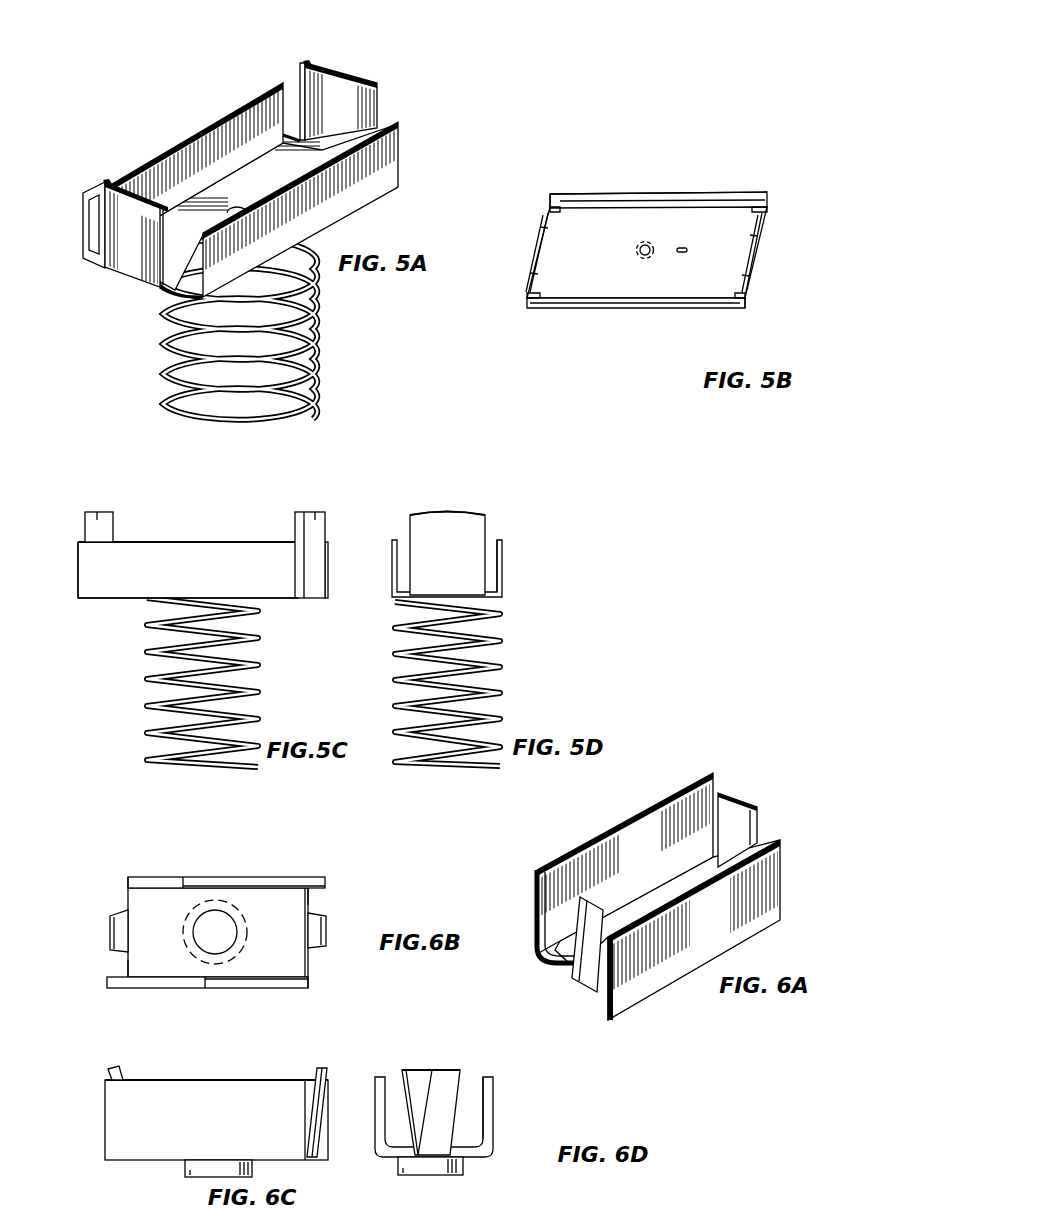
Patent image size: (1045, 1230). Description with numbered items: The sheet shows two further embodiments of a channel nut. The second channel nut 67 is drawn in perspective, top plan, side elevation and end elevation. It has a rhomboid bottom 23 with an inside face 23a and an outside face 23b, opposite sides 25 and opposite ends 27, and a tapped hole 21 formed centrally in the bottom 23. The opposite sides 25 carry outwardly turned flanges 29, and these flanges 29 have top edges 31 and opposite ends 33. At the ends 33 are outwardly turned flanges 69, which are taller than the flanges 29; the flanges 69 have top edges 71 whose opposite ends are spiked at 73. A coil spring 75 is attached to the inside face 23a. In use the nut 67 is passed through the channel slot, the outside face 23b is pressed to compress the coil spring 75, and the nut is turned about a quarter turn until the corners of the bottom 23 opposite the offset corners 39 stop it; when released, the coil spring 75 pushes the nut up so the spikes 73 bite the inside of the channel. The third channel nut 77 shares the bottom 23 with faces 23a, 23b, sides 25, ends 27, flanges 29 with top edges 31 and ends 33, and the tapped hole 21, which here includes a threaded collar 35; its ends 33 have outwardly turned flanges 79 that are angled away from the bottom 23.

In FIG. 5B, the tapped hole 21 is at (642, 265).
In FIG. 6B, the tapped hole 21 is at (235, 912).
In FIG. 5A, the bottom 23 is at (228, 186).
In FIG. 5B, the bottom 23 is at (550, 300).
In FIG. 6B, the bottom 23 is at (157, 915).
In FIG. 6A, the bottom 23 is at (662, 893).
In FIG. 5C, the inside face 23a is at (120, 600).
In FIG. 6D, the inside face 23a is at (477, 1160).
In FIG. 6D, the outside face 23b is at (405, 1070).
In FIG. 5A, the opposite sides 25 is at (210, 182).
In FIG. 5B, the opposite sides 25 is at (657, 198).
In FIG. 6B, the opposite sides 25 is at (182, 877).
In FIG. 5A, the opposite ends 27 is at (292, 135).
In FIG. 5B, the opposite ends 27 is at (543, 208).
In FIG. 6B, the opposite ends 27 is at (128, 961).
In FIG. 5A, the flanges 29 is at (130, 170).
In FIG. 5B, the flanges 29 is at (723, 193).
In FIG. 5C, the flanges 29 is at (218, 585).
In FIG. 5D, the flanges 29 is at (390, 570).
In FIG. 6B, the flanges 29 is at (213, 877).
In FIG. 6C, the flanges 29 is at (218, 1132).
In FIG. 6D, the flanges 29 is at (375, 1125).
In FIG. 6A, the flanges 29 is at (627, 861).
In FIG. 5A, the top edges 31 is at (183, 97).
In FIG. 5B, the top edges 31 is at (618, 199).
In FIG. 5C, the top edges 31 is at (202, 540).
In FIG. 5D, the top edges 31 is at (398, 538).
In FIG. 6B, the top edges 31 is at (232, 883).
In FIG. 6C, the top edges 31 is at (250, 1080).
In FIG. 6D, the top edges 31 is at (382, 1075).
In FIG. 6A, the top edges 31 is at (622, 820).
In FIG. 5A, the opposite ends 33 is at (83, 228).
In FIG. 5C, the opposite ends 33 is at (78, 562).
In FIG. 5D, the opposite ends 33 is at (500, 570).
In FIG. 6B, the opposite ends 33 is at (327, 880).
In FIG. 6C, the opposite ends 33 is at (105, 1108).
In FIG. 6D, the opposite ends 33 is at (487, 1107).
In FIG. 6A, the opposite ends 33 is at (537, 898).
In FIG. 6D, the threaded collar 35 is at (402, 1170).
In FIG. 5B, the offset corners 39 is at (548, 194).
In FIG. 6B, the offset corners 39 is at (128, 877).
In FIG. 5A, the channel nut 67 is at (370, 66).
In FIG. 5B, the channel nut 67 is at (595, 187).
In FIG. 5C, the channel nut 67 is at (160, 527).
In FIG. 5D, the channel nut 67 is at (522, 555).
In FIG. 5A, the flanges 69 is at (323, 113).
In FIG. 5B, the flanges 69 is at (757, 252).
In FIG. 5C, the flanges 69 is at (84, 530).
In FIG. 5D, the flanges 69 is at (440, 577).
In FIG. 5A, the top edges 71 is at (125, 172).
In FIG. 5B, the top edges 71 is at (538, 248).
In FIG. 5C, the top edges 71 is at (97, 512).
In FIG. 5D, the top edges 71 is at (447, 512).
In FIG. 5A, the spikes 73 is at (307, 62).
In FIG. 5C, the spikes 73 is at (313, 512).
In FIG. 5D, the spikes 73 is at (412, 511).
In FIG. 5A, the coil spring 75 is at (312, 332).
In FIG. 5C, the coil spring 75 is at (262, 643).
In FIG. 5D, the coil spring 75 is at (500, 720).
In FIG. 6B, the channel nut 77 is at (336, 868).
In FIG. 6C, the channel nut 77 is at (331, 1060).
In FIG. 6D, the channel nut 77 is at (494, 1068).
In FIG. 6A, the channel nut 77 is at (735, 756).
In FIG. 6B, the flanges 79 is at (113, 932).
In FIG. 6C, the flanges 79 is at (122, 1070).
In FIG. 6D, the flanges 79 is at (437, 1063).
In FIG. 6A, the flanges 79 is at (747, 798).